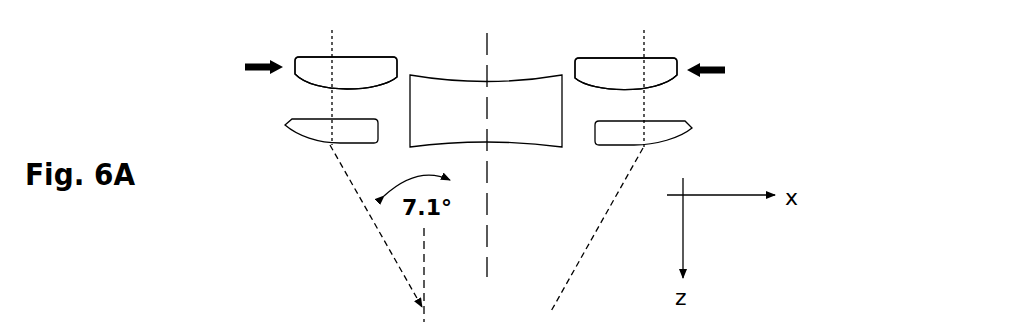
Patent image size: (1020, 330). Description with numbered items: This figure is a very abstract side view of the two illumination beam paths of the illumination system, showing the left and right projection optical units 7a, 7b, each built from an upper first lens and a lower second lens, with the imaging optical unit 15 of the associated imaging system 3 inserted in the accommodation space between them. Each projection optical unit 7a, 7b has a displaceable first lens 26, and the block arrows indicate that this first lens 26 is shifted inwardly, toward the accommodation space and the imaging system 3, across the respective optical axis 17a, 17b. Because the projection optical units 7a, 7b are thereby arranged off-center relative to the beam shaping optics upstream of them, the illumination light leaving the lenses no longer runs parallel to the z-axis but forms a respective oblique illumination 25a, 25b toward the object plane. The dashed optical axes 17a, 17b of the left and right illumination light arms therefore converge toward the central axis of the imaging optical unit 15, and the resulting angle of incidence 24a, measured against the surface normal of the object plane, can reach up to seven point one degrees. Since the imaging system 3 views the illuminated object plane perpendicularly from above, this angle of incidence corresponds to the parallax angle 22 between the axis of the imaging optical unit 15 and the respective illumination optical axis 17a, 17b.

The imaging system 3 is at (486, 91).
The imaging optical unit 15 is at (518, 95).
The projection optical unit 7a is at (230, 100).
The projection optical unit 7b is at (733, 110).
The lens 26 is at (322, 72).
The parallax angle 22 is at (346, 232).
The oblique illumination 25a is at (346, 232).
The optical axis 17a is at (362, 232).
The angle of incidence 24a is at (410, 283).
The oblique illumination 25b is at (571, 230).
The optical axis 17b is at (588, 243).